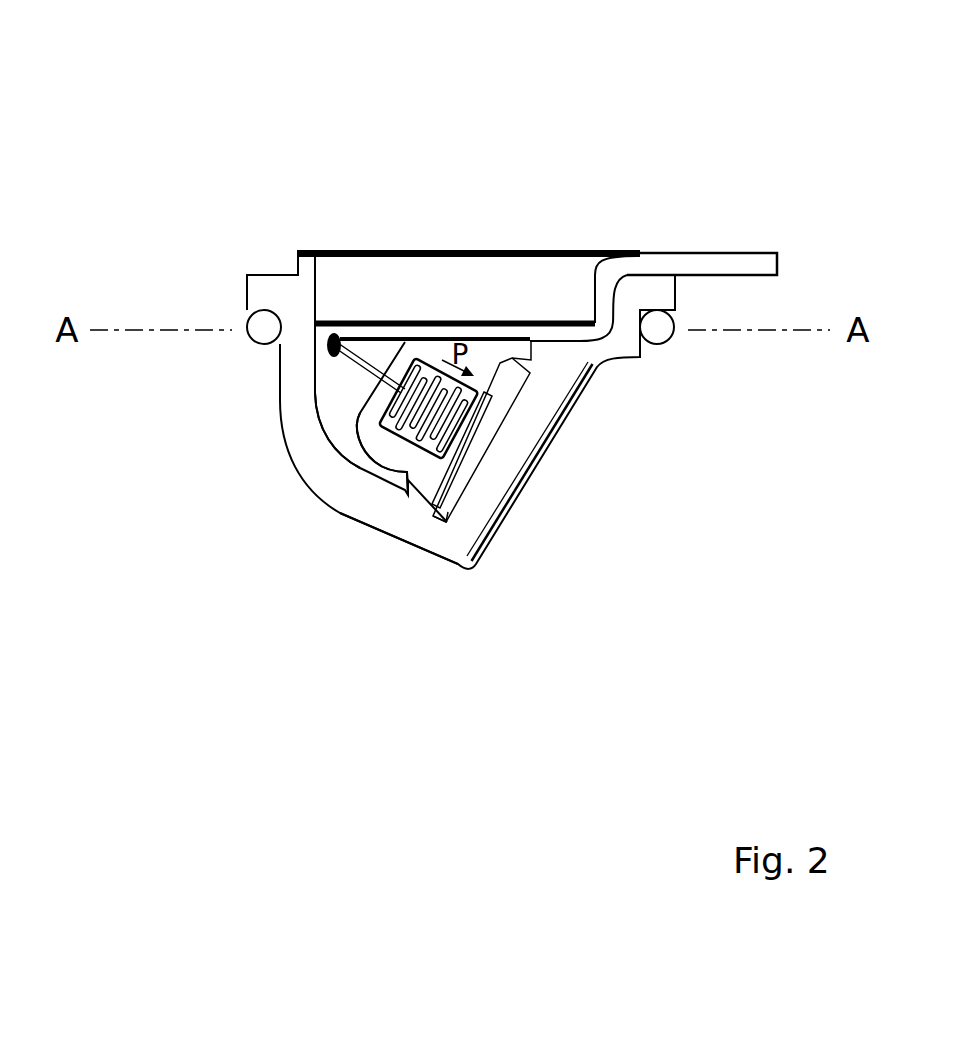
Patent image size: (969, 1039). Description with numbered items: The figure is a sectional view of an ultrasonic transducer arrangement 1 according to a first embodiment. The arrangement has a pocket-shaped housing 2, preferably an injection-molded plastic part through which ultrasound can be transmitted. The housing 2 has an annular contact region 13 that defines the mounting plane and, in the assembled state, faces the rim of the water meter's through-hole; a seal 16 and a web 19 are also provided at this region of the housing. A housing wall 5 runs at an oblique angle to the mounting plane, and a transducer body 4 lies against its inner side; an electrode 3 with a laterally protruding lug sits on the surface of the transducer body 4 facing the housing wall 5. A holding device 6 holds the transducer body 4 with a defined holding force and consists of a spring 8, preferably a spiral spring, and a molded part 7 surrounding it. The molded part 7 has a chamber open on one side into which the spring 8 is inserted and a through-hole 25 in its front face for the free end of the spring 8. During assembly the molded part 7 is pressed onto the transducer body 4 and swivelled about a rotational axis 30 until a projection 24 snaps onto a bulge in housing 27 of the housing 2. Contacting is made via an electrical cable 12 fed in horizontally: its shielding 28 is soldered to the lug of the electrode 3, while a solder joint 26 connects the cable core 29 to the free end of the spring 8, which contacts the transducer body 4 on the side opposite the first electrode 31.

The ultrasonic transducer arrangement 1 is at (495, 49).
The housing 2 is at (307, 377).
The electrode 3 is at (497, 448).
The transducer body 4 is at (442, 502).
The housing wall 5 is at (567, 390).
The holding device 6 is at (325, 432).
The molded part 7 is at (380, 442).
The spring 8 is at (427, 477).
The electrical cable 12 is at (740, 258).
The contact region 13 is at (247, 277).
The seal 16 is at (246, 324).
The web 19 is at (306, 260).
The projection 24 is at (425, 478).
The through-hole 25 is at (370, 393).
The solder joint 26 is at (325, 345).
The bulge in housing 27 is at (395, 485).
The shielding 28 is at (580, 360).
The cable core 29 is at (343, 333).
The rotational axis 30 is at (513, 327).
The first electrode 31 is at (515, 417).